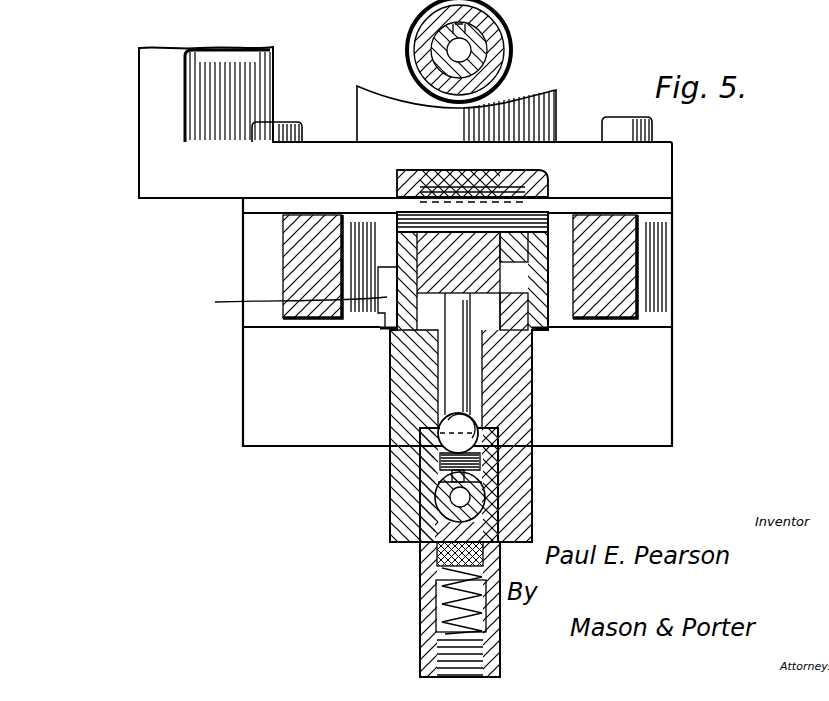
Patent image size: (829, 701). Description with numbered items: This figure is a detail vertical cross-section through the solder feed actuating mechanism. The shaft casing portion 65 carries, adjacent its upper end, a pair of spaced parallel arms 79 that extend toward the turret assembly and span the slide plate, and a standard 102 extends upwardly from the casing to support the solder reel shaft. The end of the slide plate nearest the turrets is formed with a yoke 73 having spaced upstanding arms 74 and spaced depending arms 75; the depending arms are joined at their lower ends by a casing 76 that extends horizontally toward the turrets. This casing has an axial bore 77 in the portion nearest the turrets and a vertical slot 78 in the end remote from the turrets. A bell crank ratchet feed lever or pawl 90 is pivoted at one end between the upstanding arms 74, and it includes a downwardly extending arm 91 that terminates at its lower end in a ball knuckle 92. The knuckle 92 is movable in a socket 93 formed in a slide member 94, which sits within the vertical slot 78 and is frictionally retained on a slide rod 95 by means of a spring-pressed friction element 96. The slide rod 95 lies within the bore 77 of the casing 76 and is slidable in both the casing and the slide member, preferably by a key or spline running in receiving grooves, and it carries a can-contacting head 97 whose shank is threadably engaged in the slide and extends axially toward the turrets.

The standard 102 is at (152, 127).
The casing 76 is at (412, 40).
The axial bore 77 is at (410, 68).
The can-contacting head 97 is at (500, 70).
The slide rod 95 is at (482, 52).
The shaft casing portion 65 is at (663, 417).
The arms 79 is at (292, 236).
The upstanding arms 74 is at (403, 256).
The bell crank ratchet feed lever or pawl 90 is at (552, 178).
The depending arms 75 is at (396, 481).
The yoke 73 is at (386, 341).
The downwardly extending arm 91 is at (457, 363).
The ball knuckle 92 is at (455, 433).
The socket 93 is at (496, 440).
The vertical slot 78 is at (412, 508).
The slide member 94 is at (428, 520).
The spring-pressed friction element 96 is at (442, 556).